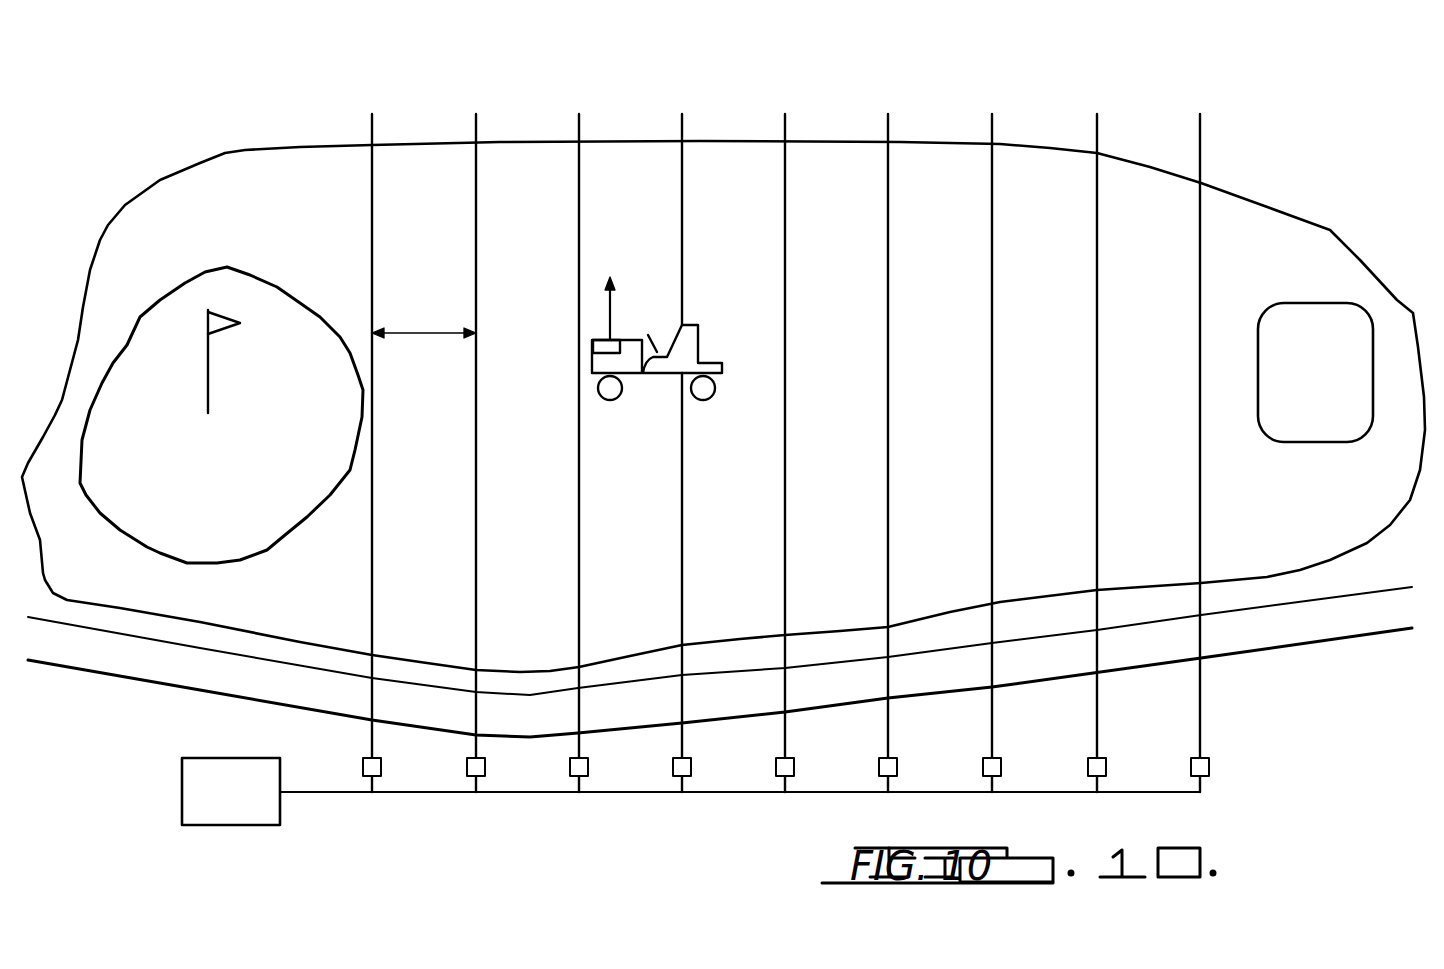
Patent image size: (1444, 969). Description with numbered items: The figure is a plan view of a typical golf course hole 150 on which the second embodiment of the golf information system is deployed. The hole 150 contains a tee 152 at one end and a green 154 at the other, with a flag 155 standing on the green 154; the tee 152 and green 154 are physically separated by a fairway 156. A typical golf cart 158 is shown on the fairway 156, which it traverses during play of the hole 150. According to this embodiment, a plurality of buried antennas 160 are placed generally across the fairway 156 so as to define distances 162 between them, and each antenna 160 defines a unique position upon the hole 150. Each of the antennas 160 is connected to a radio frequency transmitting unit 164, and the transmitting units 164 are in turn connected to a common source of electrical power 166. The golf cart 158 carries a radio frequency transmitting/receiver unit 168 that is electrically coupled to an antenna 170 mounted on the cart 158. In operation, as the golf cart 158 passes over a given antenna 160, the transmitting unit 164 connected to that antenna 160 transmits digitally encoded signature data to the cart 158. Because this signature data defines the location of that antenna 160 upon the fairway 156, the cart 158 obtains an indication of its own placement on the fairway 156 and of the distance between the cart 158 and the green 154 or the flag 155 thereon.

The golf course hole 150 is at (1040, 112).
The tee 152 is at (1330, 367).
The green 154 is at (220, 507).
The flag 155 is at (210, 356).
The fairway 156 is at (864, 471).
The golf cart 158 is at (612, 352).
The buried antennas 160 is at (477, 132).
The distances 162 is at (418, 327).
The radio frequency transmitting unit 164 is at (880, 767).
The source of electrical power 166 is at (182, 791).
The radio frequency transmitting/receiver unit 168 is at (593, 347).
The antenna 170 is at (614, 288).